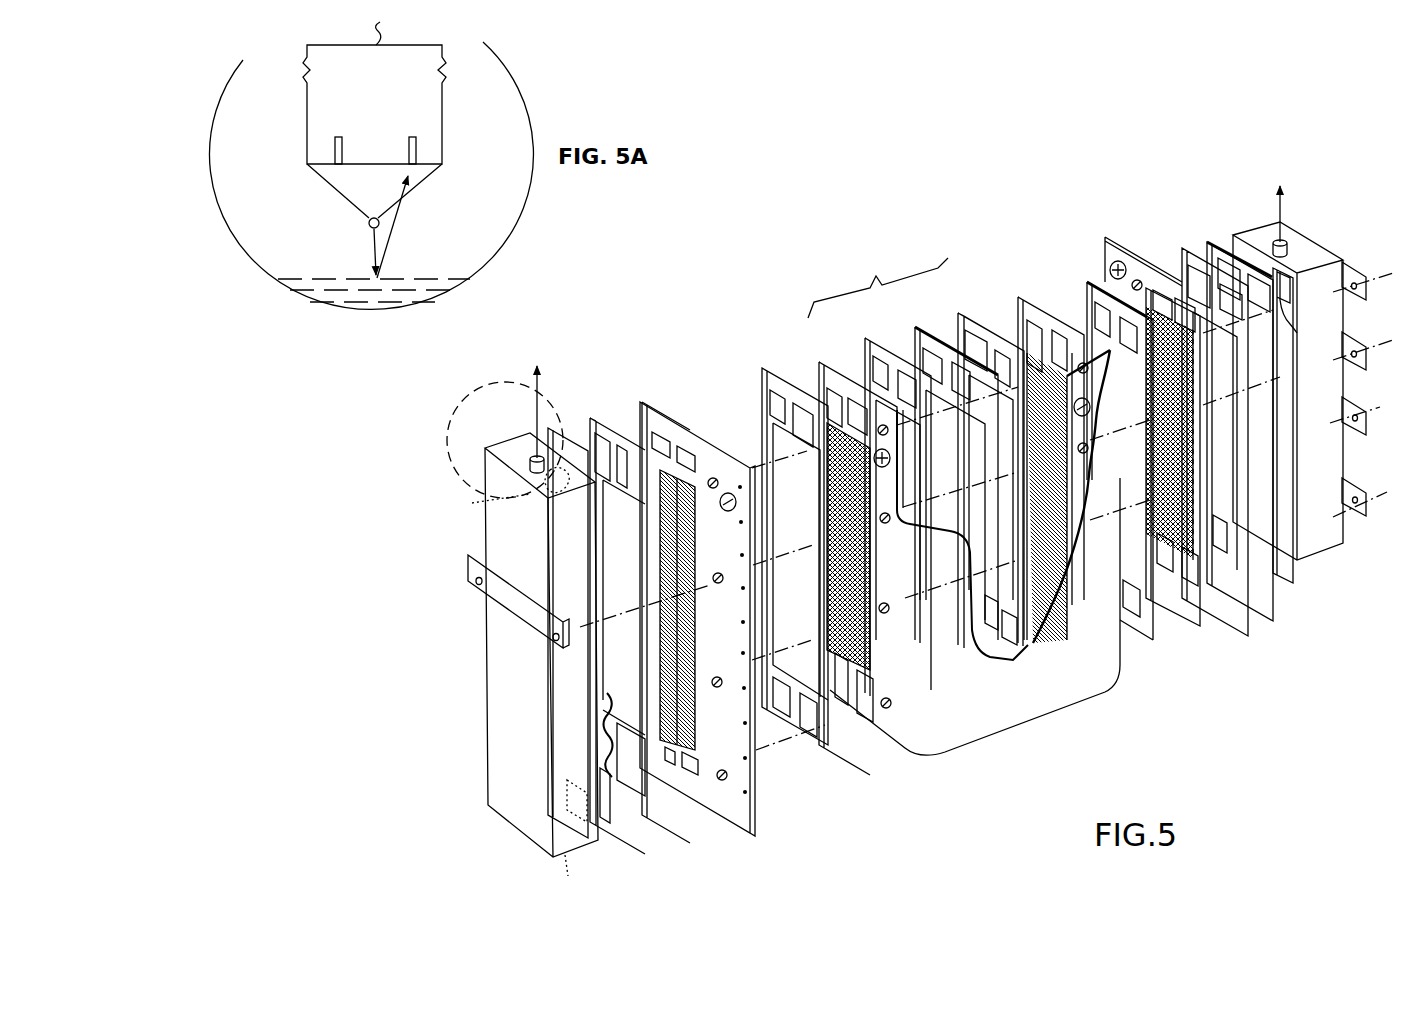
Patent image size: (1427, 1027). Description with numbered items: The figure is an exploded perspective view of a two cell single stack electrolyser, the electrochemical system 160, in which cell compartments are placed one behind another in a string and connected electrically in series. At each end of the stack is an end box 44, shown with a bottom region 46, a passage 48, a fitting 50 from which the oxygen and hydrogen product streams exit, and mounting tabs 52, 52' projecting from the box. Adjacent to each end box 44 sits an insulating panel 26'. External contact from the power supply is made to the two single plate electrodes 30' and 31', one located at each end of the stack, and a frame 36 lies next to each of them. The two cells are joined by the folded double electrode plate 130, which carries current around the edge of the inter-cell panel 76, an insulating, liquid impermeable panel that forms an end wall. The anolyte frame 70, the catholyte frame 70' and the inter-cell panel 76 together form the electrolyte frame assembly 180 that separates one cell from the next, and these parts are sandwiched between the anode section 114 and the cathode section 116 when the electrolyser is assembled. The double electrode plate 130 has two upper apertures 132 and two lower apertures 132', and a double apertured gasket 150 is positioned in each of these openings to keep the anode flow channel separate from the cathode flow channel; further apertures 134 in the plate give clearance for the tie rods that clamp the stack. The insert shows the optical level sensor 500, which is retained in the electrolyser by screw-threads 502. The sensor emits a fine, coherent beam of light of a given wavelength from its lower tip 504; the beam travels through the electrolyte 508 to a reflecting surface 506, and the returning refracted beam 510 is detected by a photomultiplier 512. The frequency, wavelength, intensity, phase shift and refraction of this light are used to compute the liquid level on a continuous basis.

In FIG. 5, the end box 44 is at (501, 713).
In FIG. 5, the end block bottom 46 is at (561, 874).
In FIG. 5, the gas passage 48 is at (887, 392).
In FIG. 5, the gas outlet fitting 50 is at (530, 457).
In FIG. 5, the mounting tab 52 is at (1375, 486).
In FIG. 5, the mounting tab 52' is at (945, 455).
In FIG. 5, the insulating panel 26' is at (942, 553).
In FIG. 5, the catholyte frame 70' is at (804, 574).
In FIG. 5, the double apertured gasket 150 is at (656, 424).
In FIG. 5, the upper apertures 132 is at (686, 578).
In FIG. 5, the lower apertures 132' is at (671, 825).
In FIG. 5, the single plate electrode 30' is at (697, 634).
In FIG. 5, the frame 36 is at (758, 395).
In FIG. 5, the anode section 114 is at (859, 553).
In FIG. 5, the apertures 134 is at (886, 697).
In FIG. 5, the anolyte frame 70 is at (1031, 443).
In FIG. 5, the inter-cell panel 76 is at (915, 318).
In FIG. 5, the cathode section 116 is at (1013, 338).
In FIG. 5, the single plate electrode 31' is at (1127, 395).
In FIG. 5, the double electrode plate 130 is at (1045, 704).
In FIG. 5, the electrolyte frame assembly 180 is at (878, 283).
In FIG. 5, the electrochemical system 160 is at (1360, 204).
In FIG. 5A, the optical level sensor 500 is at (462, 105).
In FIG. 5A, the screw-threads 502 is at (301, 74).
In FIG. 5A, the lower tip 504 is at (366, 231).
In FIG. 5A, the reflecting surface 506 is at (394, 279).
In FIG. 5A, the electrolyte 508 is at (372, 297).
In FIG. 5A, the refracted beam 510 is at (392, 231).
In FIG. 5A, the photomultiplier 512 is at (416, 150).